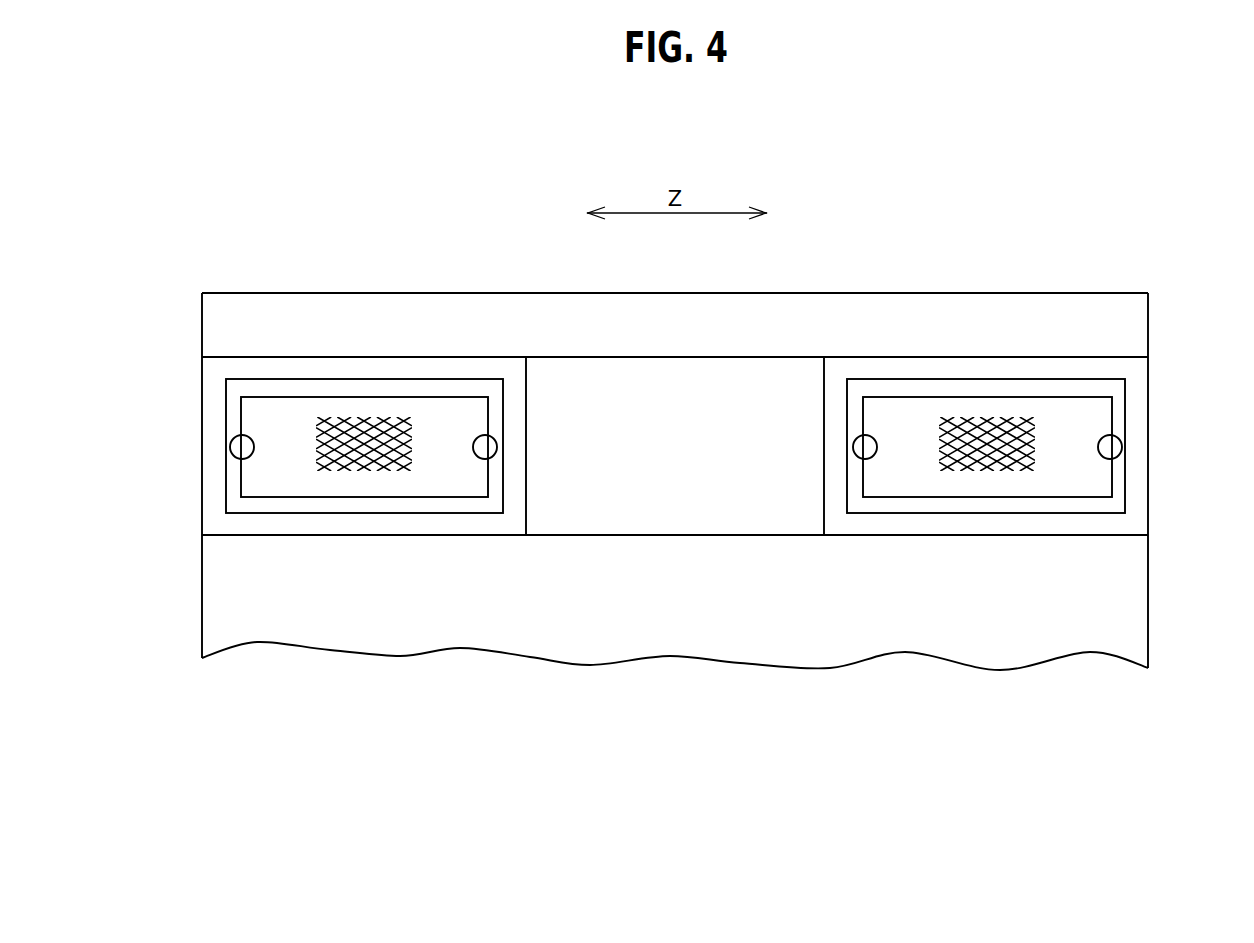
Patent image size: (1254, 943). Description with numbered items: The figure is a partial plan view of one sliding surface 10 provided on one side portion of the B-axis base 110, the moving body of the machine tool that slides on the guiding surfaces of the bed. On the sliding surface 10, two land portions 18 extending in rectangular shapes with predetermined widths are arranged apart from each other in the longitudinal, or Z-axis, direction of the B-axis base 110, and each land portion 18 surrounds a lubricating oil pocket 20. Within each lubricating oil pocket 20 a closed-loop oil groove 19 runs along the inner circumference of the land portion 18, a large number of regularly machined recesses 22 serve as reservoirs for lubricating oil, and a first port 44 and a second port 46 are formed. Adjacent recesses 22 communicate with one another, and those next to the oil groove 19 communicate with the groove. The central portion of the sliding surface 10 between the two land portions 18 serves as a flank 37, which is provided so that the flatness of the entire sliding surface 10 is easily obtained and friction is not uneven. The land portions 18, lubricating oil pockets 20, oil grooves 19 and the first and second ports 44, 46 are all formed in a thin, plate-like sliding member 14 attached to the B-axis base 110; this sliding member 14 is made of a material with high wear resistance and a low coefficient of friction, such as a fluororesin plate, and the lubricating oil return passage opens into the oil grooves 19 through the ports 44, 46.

The sliding surface 10 is at (892, 283).
The B-axis base 110 is at (1140, 325).
The land portion 18 is at (388, 365).
The flank 37 is at (692, 400).
The sliding member 14 is at (527, 475).
The oil groove 19 is at (338, 507).
The lubricating oil pocket 20 is at (467, 465).
The recess 22 is at (390, 453).
The first port 44 is at (490, 447).
The second port 46 is at (237, 453).